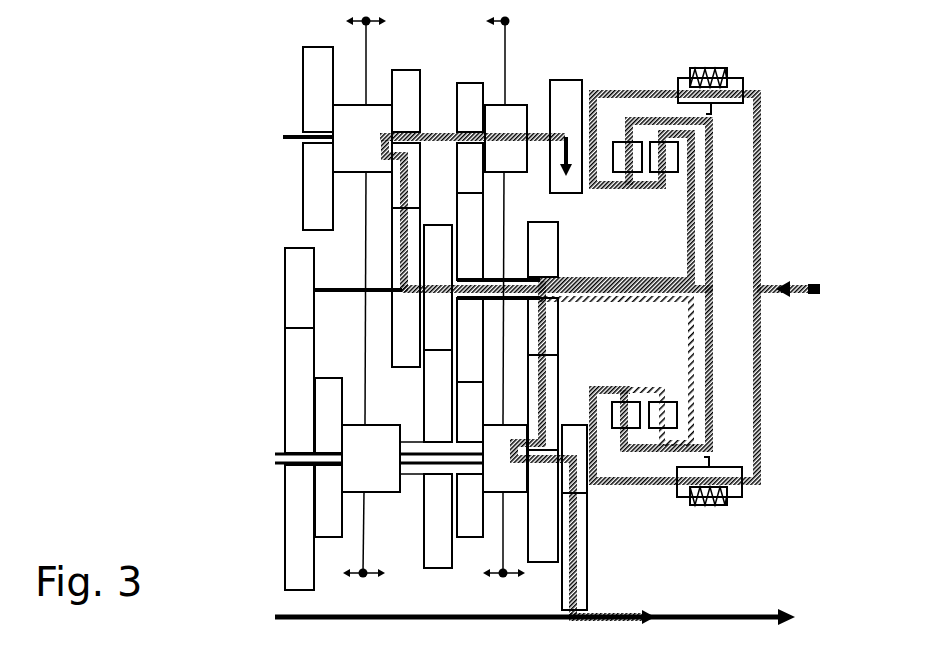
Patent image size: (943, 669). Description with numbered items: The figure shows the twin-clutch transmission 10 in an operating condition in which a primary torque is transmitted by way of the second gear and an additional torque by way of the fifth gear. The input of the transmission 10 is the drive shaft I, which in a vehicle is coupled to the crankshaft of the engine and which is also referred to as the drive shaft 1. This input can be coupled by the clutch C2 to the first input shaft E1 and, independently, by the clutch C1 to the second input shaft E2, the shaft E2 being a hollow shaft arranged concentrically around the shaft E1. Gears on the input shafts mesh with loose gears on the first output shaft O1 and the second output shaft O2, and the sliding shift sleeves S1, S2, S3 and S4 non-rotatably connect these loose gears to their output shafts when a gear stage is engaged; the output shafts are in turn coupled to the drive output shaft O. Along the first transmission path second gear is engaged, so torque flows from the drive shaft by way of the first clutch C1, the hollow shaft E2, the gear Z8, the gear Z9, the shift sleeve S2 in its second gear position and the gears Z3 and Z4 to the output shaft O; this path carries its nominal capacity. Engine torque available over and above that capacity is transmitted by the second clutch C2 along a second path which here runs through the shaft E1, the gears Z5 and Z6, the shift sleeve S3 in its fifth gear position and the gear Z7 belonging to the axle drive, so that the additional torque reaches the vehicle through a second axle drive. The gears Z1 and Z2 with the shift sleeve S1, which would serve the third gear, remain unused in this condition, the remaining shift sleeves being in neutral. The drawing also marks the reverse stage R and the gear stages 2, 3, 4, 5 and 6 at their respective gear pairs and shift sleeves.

The twin-clutch transmission 10 is at (594, 14).
The reverse gear R is at (318, 124).
The fifth gear shift axis 5 is at (381, 296).
The sixth gear shift axis 6 is at (493, 297).
The second output shaft O2 is at (292, 136).
The shift sleeve S3 is at (362, 138).
The shift sleeve S4 is at (506, 138).
The shift sleeve S1 is at (371, 458).
The shift sleeve S2 is at (505, 458).
The drive shaft 1 is at (313, 430).
The second gear 2 is at (538, 600).
The third gear 3 is at (456, 347).
The fourth gear 4 is at (470, 455).
The first input shaft E1 is at (353, 289).
The second input shaft E2 is at (628, 278).
The first output shaft O1 is at (366, 458).
The gear Z6 is at (414, 98).
The gear Z5 is at (395, 265).
The gear Z1 is at (437, 233).
The gear Z2 is at (426, 404).
The gear Z7 is at (573, 90).
The gear Z8 is at (560, 245).
The gear Z9 is at (556, 370).
The gear Z3 is at (574, 430).
The gear Z4 is at (588, 568).
The drive shaft I is at (795, 292).
The drive output shaft O is at (549, 619).
The clutch C1 is at (664, 157).
The clutch C2 is at (627, 157).